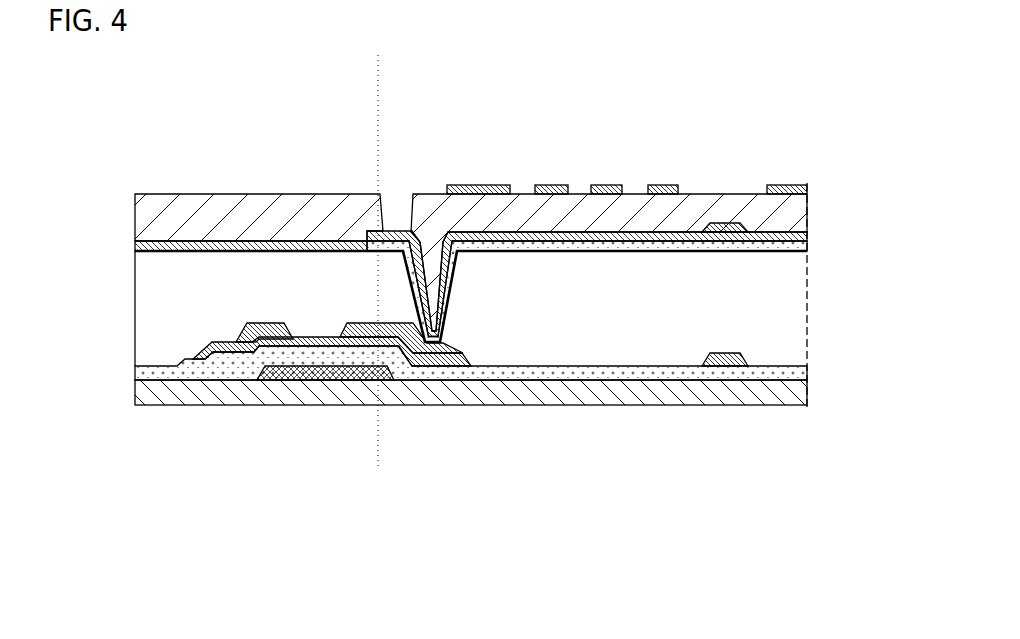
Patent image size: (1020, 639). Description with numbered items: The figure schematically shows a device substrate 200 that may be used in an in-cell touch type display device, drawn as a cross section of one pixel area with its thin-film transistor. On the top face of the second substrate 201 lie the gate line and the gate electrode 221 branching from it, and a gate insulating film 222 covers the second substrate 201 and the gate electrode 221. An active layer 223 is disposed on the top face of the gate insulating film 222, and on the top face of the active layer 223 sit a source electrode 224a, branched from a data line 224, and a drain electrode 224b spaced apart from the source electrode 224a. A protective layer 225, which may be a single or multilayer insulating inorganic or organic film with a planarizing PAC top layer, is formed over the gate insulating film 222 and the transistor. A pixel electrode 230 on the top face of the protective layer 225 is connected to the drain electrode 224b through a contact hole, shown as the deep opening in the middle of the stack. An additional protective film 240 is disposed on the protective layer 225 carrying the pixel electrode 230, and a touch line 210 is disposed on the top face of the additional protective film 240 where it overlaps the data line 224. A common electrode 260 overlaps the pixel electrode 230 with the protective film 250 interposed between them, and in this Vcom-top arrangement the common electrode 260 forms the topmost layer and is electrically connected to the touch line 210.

The device substrate 200 is at (668, 127).
The second substrate 201 is at (793, 392).
The touch line 210 is at (723, 233).
The gate electrode 221 is at (329, 381).
The gate insulating film 222 is at (793, 370).
The active layer 223 is at (413, 356).
The data line 224 is at (724, 368).
The source electrode 224a is at (213, 354).
The drain electrode 224b is at (433, 348).
The protective layer 225 is at (793, 331).
The pixel electrode 230 is at (797, 249).
The additional protective film 240 is at (795, 238).
The protective film 250 is at (793, 208).
The common electrode 260 is at (678, 186).